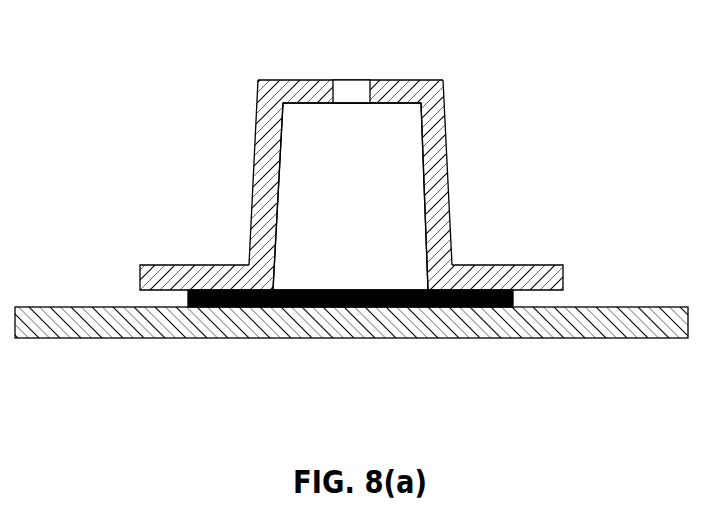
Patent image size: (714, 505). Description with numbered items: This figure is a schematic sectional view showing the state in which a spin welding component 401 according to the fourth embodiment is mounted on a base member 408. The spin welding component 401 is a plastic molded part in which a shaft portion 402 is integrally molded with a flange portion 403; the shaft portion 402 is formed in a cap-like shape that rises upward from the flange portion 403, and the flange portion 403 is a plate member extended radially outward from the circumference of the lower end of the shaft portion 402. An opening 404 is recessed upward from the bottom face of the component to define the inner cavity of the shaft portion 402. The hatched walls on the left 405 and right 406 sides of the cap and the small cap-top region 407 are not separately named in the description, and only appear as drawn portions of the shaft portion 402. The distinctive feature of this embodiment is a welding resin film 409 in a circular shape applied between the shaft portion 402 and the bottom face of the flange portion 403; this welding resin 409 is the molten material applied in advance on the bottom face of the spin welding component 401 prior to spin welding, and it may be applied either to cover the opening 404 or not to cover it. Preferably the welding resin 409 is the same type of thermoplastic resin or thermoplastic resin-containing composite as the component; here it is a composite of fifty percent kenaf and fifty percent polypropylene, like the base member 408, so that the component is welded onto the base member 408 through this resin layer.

The spin welding component 401 is at (357, 207).
The shaft portion 402 is at (253, 172).
The flange portion 403 is at (172, 260).
The opening 404 is at (357, 278).
The right side wall of cap 405 is at (448, 153).
The top plate of cap 406 is at (428, 82).
The window portion 407 is at (360, 88).
The base member 408 is at (108, 322).
The welding resin film 409 is at (257, 295).